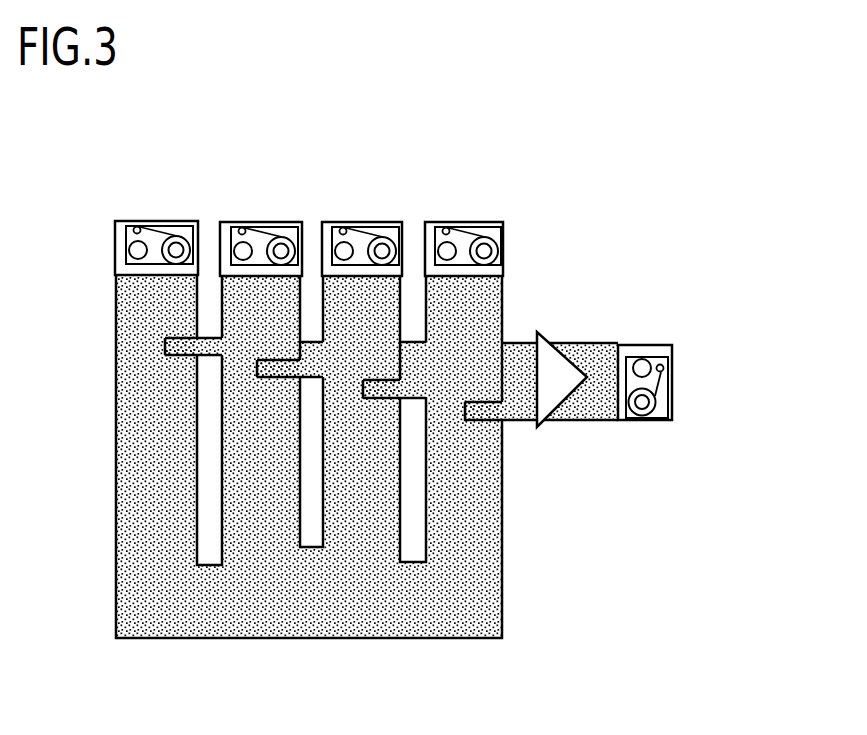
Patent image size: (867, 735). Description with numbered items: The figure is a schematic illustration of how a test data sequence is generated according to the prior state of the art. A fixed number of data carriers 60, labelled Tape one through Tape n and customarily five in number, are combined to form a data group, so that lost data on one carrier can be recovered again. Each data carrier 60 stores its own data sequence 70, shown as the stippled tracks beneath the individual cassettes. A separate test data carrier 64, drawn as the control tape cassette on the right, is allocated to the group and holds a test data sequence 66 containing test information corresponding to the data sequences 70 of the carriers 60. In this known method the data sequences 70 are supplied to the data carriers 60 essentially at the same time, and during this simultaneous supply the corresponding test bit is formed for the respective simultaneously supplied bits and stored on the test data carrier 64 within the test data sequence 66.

The data carrier 60 is at (154, 147).
The test data carrier 64 is at (690, 393).
The test data sequence 66 is at (593, 437).
The data sequence 70 is at (468, 662).